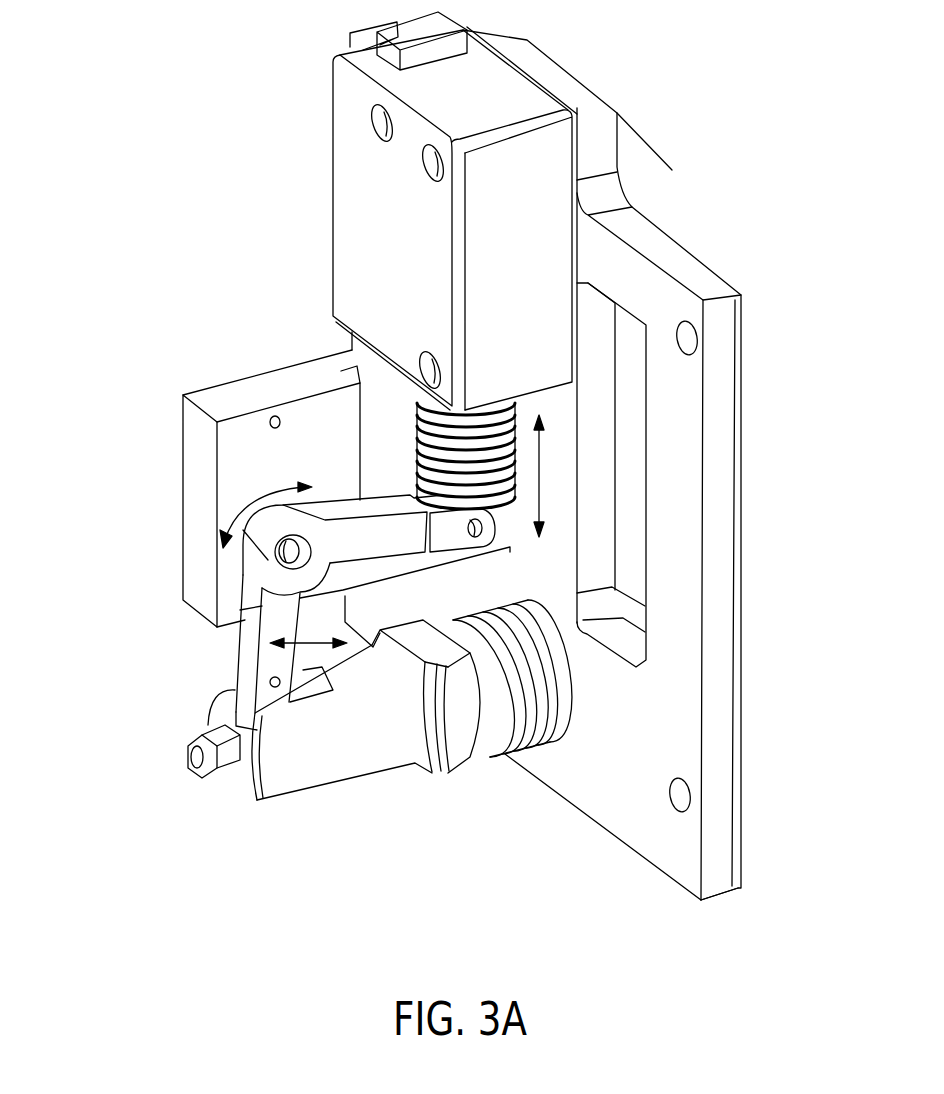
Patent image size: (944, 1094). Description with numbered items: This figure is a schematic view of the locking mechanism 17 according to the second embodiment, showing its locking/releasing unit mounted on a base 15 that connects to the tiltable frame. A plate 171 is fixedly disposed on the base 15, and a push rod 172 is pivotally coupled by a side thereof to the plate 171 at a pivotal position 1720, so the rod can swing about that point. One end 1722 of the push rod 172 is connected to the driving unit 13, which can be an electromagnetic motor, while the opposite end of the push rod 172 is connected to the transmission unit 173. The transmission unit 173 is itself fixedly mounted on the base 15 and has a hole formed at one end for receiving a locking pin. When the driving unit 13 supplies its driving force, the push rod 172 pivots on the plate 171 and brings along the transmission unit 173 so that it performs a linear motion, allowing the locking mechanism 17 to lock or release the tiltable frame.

The driving unit 13 is at (547, 158).
The base 15 is at (722, 460).
The locking mechanism 17 is at (110, 578).
The plate 171 is at (203, 597).
The push rod 172 is at (262, 665).
The transmission unit 173 is at (290, 747).
The pivotal position 1720 is at (250, 580).
The end of the push rod 1722 is at (450, 540).